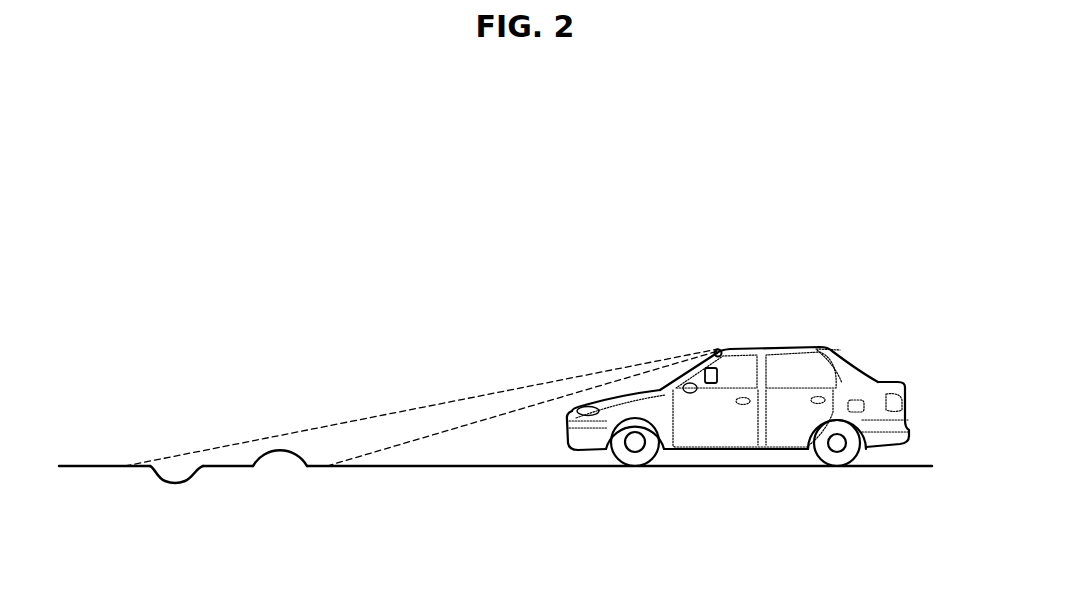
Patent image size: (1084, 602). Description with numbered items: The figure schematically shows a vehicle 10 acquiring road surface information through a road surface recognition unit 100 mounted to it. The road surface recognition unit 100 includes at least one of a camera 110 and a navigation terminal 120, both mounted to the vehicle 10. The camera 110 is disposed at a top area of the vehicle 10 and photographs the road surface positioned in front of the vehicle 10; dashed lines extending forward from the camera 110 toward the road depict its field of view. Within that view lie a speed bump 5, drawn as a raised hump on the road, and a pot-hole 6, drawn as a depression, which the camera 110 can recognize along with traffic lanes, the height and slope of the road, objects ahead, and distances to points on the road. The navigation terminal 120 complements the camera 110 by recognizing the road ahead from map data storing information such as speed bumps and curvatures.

The vehicle 10 is at (889, 393).
The road surface recognition unit 100 is at (692, 258).
The camera 110 is at (717, 350).
The navigation terminal 120 is at (722, 364).
The speed bump 5 is at (277, 461).
The pot-hole 6 is at (188, 483).